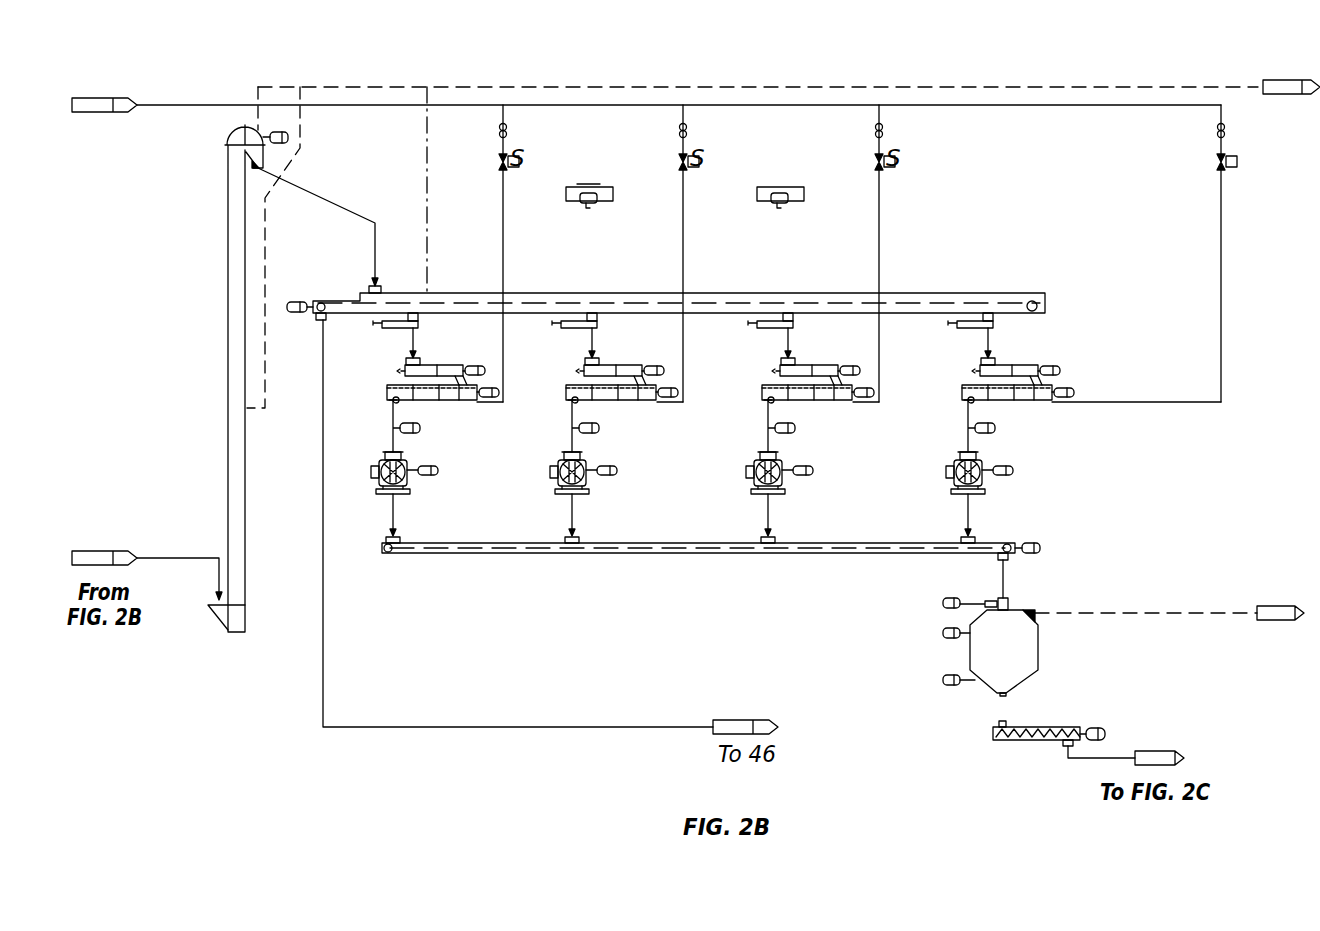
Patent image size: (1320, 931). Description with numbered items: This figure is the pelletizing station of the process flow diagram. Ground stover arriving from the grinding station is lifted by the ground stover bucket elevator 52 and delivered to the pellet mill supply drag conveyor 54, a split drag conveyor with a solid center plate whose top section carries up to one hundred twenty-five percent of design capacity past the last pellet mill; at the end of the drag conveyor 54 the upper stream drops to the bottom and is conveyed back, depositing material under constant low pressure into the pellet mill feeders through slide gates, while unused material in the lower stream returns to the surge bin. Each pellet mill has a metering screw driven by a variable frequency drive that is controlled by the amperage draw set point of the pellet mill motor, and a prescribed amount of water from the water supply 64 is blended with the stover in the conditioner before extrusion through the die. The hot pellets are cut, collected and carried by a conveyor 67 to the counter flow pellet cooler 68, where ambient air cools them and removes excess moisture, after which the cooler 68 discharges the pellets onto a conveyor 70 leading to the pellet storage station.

The ground stover bucket elevator 52 is at (228, 300).
The pellet mill supply drag conveyor 54 is at (490, 293).
The water supply 64 is at (102, 98).
The conveyor 67 is at (742, 555).
The counter flow pellet cooler 68 is at (1040, 660).
The conveyor 70 is at (1055, 727).